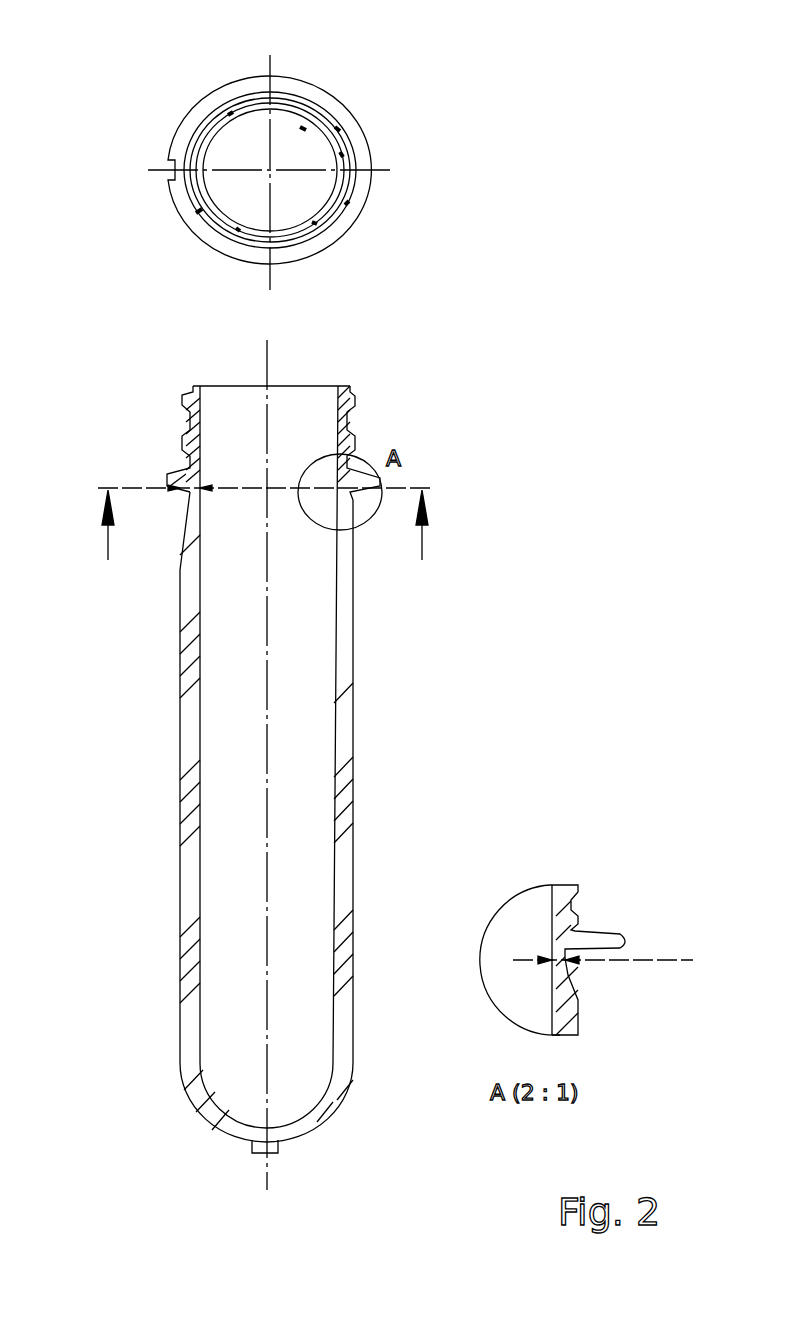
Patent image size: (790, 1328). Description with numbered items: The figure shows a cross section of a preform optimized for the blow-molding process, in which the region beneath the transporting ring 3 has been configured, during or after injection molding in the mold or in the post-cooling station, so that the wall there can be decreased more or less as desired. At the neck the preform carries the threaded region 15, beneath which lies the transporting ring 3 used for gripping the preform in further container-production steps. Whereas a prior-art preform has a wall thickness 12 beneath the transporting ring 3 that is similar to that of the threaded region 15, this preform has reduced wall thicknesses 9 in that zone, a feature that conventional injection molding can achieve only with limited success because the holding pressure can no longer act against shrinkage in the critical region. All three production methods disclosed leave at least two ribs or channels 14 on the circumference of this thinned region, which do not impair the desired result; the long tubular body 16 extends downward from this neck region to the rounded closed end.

The transporting ring 3 is at (180, 478).
The reduced wall thickness 9 is at (193, 223).
The wall thickness 12 is at (223, 747).
The ribs or channels 14 is at (335, 127).
The threaded region 15 is at (352, 415).
The tube body 16 is at (356, 789).